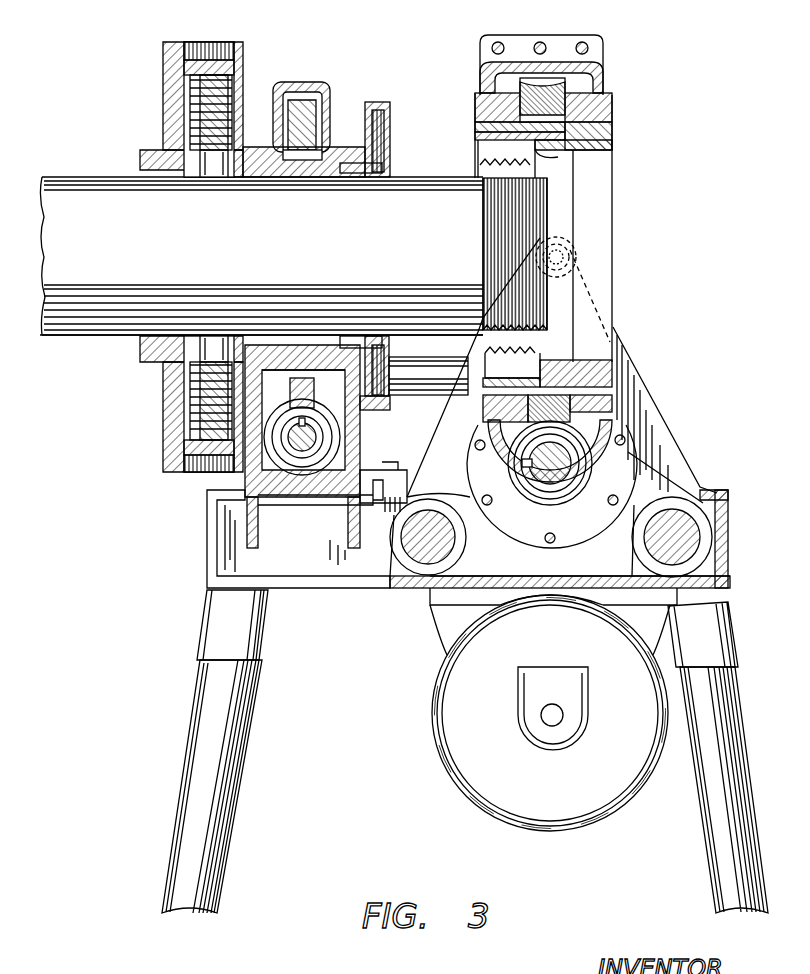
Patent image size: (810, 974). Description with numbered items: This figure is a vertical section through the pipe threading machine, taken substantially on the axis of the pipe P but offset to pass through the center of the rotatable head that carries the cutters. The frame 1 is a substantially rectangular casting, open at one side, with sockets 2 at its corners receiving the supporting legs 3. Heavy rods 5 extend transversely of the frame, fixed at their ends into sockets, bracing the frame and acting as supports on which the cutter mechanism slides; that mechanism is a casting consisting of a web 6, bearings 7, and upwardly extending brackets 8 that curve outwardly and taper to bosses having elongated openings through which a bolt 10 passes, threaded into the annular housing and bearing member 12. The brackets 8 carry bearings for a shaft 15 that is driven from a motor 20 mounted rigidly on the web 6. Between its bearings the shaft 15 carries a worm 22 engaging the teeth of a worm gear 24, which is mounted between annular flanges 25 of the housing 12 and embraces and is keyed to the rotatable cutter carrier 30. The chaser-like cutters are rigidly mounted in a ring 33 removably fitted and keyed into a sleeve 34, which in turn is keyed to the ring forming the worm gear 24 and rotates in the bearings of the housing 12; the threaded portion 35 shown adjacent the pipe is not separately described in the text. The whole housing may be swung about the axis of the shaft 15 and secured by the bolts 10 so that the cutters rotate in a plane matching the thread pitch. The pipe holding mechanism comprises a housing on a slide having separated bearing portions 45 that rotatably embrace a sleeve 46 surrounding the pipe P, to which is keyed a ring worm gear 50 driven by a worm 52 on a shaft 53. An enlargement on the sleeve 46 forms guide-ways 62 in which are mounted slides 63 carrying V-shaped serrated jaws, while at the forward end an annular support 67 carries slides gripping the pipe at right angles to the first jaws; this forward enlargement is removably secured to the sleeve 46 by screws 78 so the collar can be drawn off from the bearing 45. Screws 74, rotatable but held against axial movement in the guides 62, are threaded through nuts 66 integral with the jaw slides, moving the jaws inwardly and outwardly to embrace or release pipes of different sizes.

The pipe P is at (293, 256).
The frame 1 is at (322, 578).
The sockets 2 is at (212, 628).
The supporting legs 3 is at (240, 718).
The rods 5 is at (652, 548).
The web 6 is at (500, 560).
The bearings 7 is at (468, 540).
The brackets 8 is at (636, 380).
The bolt 10 is at (575, 255).
The housing and bearing member 12 is at (590, 90).
The shaft 15 is at (560, 480).
The motor 20 is at (450, 752).
The worm 22 is at (592, 466).
The worm gear 24 is at (578, 440).
The annular flanges 25 is at (478, 103).
The rotatable cutter carrier 30 is at (605, 190).
The ring 33 is at (560, 153).
The sleeve 34 is at (613, 136).
The threaded portion 35 is at (480, 160).
The bearing portions 45 is at (306, 423).
The sleeve 46 is at (272, 340).
The ring worm gear 50 is at (300, 85).
The worm 52 is at (305, 480).
The shaft 53 is at (275, 495).
The guide-ways 62 is at (243, 70).
The slides 63 is at (163, 48).
The nuts 66 is at (165, 130).
The annular support 67 is at (385, 273).
The screws 74 is at (210, 110).
The screws 78 is at (385, 345).